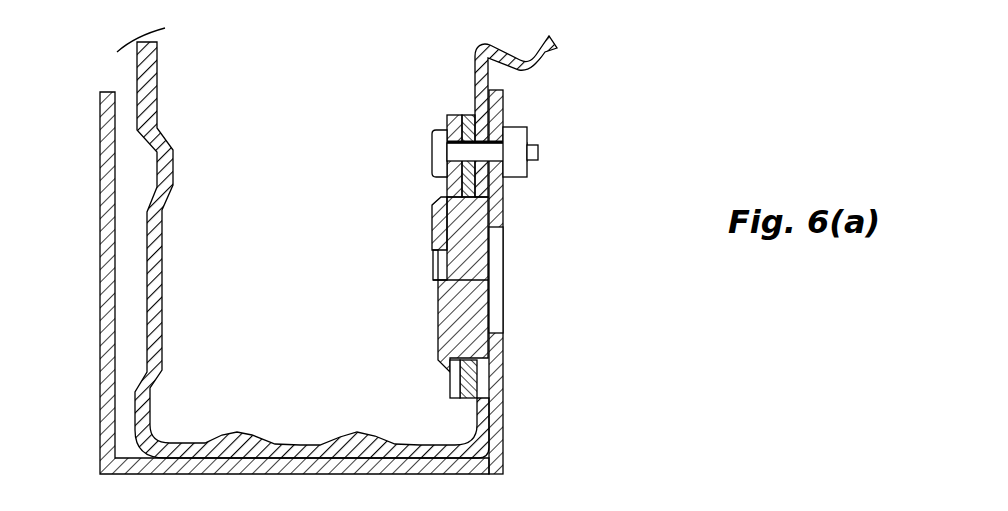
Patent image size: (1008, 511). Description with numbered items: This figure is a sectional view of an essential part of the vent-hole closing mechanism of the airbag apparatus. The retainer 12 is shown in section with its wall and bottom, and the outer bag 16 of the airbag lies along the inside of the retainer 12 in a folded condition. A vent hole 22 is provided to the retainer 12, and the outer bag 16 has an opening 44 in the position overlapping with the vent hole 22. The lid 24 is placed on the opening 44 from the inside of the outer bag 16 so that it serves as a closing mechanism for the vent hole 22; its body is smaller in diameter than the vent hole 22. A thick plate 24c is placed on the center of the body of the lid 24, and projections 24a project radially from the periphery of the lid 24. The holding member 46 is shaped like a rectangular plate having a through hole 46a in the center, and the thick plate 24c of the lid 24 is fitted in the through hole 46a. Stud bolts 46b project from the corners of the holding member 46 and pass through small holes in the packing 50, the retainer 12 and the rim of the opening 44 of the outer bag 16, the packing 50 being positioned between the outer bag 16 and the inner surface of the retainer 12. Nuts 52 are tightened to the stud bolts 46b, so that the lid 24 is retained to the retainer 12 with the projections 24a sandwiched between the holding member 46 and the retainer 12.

The retainer 12 is at (100, 355).
The outer bag 16 is at (158, 52).
The vent hole 22 is at (497, 240).
The lid 24 is at (491, 293).
The projections 24a is at (447, 195).
The thick plate 24c is at (437, 290).
The opening 44 is at (500, 336).
The holding member 46 is at (457, 115).
The through hole 46a is at (432, 250).
The stud bolts 46b is at (540, 152).
The packing 50 is at (450, 375).
The nuts 52 is at (520, 127).